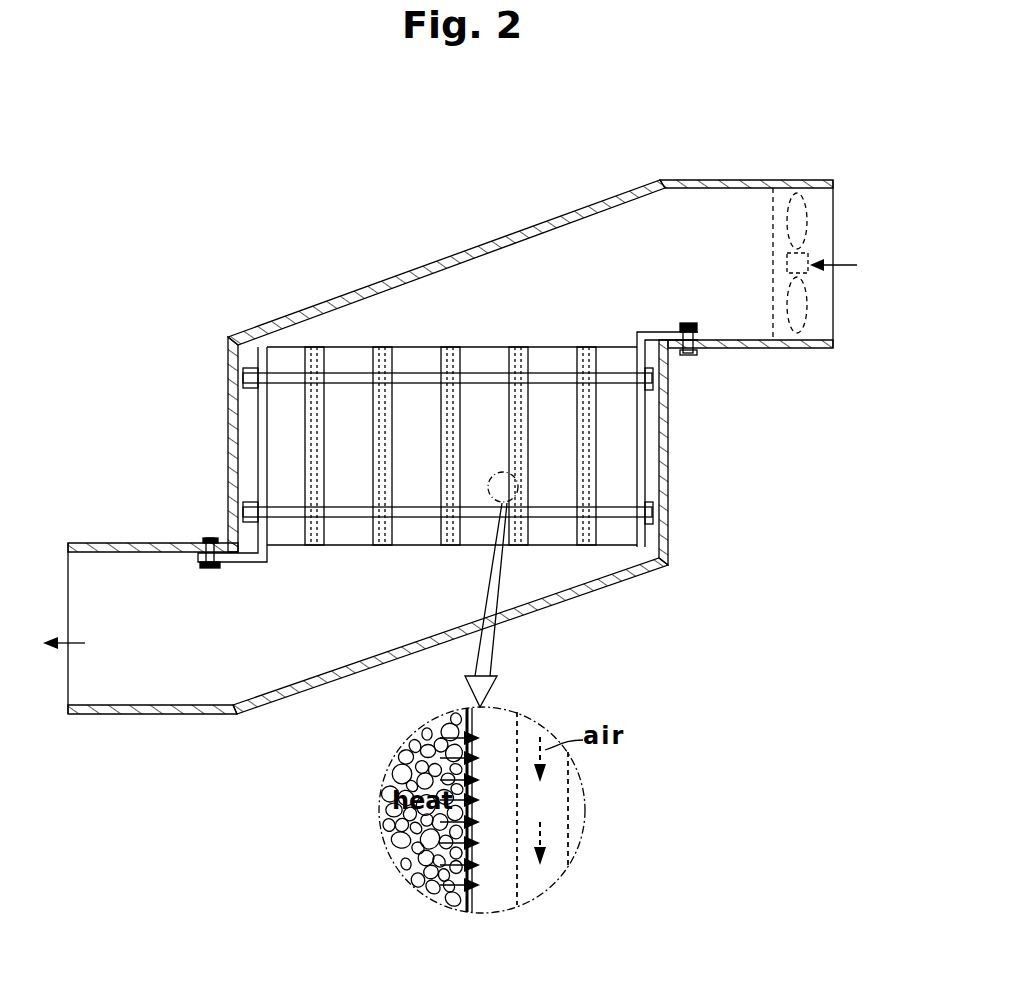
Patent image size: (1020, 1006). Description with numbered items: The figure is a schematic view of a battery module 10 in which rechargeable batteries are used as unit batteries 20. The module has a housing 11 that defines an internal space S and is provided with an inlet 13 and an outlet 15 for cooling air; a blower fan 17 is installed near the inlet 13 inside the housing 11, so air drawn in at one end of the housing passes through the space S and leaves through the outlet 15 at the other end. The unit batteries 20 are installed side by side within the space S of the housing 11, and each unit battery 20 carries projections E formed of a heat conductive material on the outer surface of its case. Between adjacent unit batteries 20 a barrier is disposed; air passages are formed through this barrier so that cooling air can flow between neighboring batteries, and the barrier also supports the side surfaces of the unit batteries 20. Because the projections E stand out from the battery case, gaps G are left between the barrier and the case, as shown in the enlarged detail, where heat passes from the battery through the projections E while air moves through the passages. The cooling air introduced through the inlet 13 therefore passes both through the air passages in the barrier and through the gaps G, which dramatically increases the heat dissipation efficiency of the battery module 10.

The heat exchanger 10 is at (464, 441).
The housing 11 is at (576, 210).
The inlet 13 is at (829, 177).
The outlet 15 is at (113, 714).
The blower fan 17 is at (818, 250).
The unit battery 20 is at (448, 464).
The internal space S is at (478, 288).
The projection E is at (440, 893).
The gap G is at (457, 918).